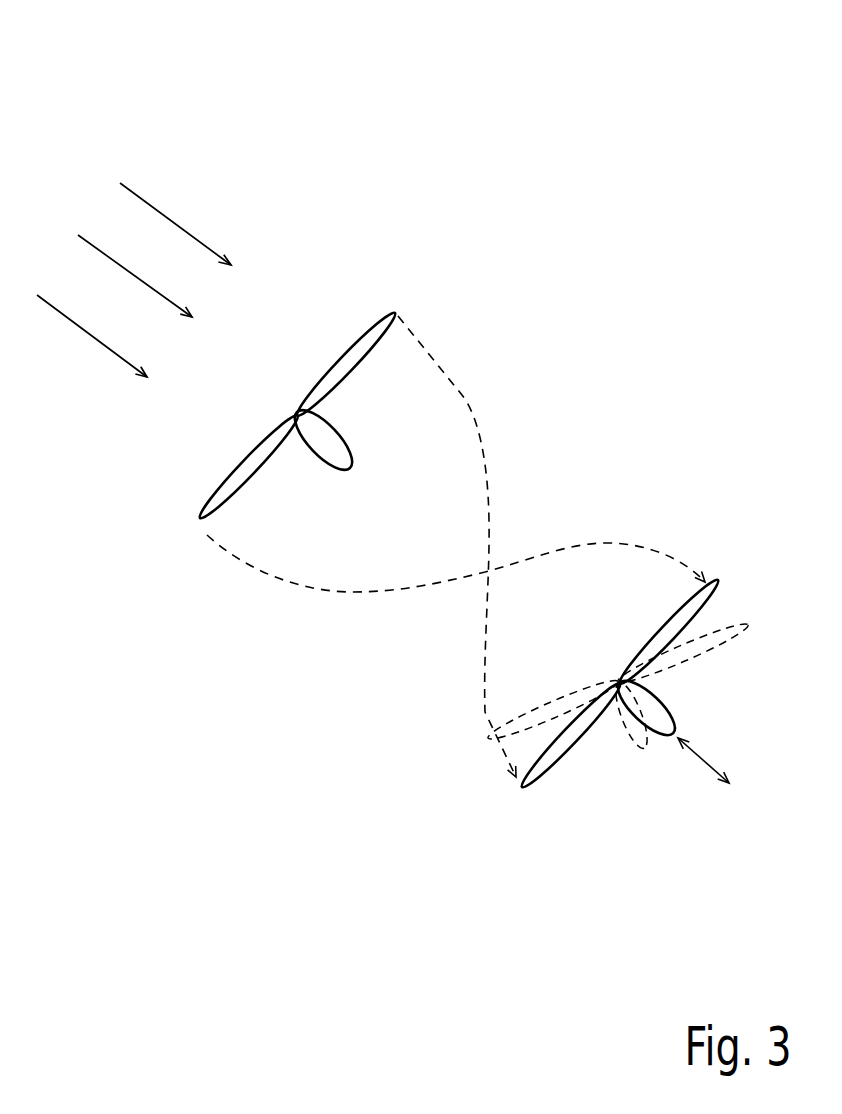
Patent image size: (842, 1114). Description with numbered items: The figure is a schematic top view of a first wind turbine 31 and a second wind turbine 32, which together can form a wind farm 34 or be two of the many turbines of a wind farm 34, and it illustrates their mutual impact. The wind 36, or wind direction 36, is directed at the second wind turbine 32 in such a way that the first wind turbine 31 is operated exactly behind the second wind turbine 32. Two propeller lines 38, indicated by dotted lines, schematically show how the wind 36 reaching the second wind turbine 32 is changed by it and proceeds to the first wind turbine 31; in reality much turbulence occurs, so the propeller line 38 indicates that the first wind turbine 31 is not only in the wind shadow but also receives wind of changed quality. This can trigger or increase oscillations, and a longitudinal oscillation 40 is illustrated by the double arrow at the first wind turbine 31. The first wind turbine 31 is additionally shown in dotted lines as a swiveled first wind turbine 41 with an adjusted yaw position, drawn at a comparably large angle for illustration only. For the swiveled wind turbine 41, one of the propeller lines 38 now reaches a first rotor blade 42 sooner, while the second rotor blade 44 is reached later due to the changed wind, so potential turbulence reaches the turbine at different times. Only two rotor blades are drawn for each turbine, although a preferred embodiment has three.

The first wind turbine 31 is at (592, 828).
The second wind turbine 32 is at (222, 622).
The wind farm 34 is at (668, 125).
The wind 36 is at (53, 307).
The propeller line 38 is at (463, 395).
The longitudinal oscillation 40 is at (707, 757).
The swiveled first wind turbine 41 is at (643, 741).
The first rotor blade 42 is at (513, 733).
The second rotor blade 44 is at (732, 625).